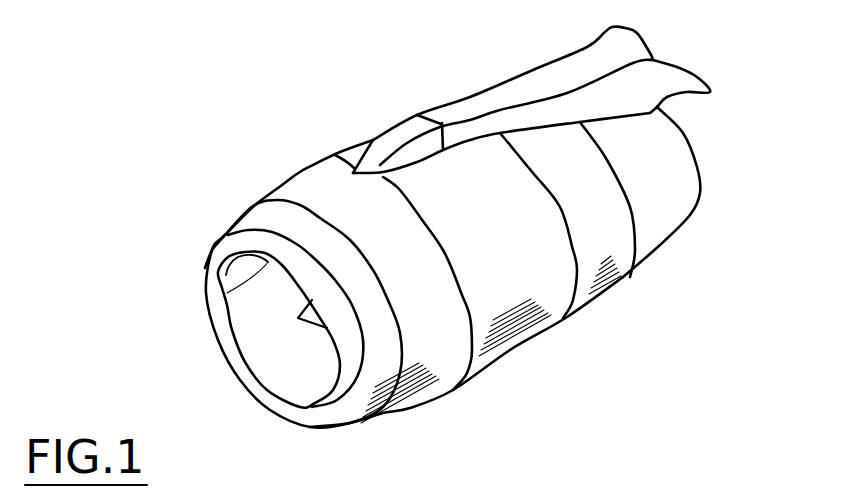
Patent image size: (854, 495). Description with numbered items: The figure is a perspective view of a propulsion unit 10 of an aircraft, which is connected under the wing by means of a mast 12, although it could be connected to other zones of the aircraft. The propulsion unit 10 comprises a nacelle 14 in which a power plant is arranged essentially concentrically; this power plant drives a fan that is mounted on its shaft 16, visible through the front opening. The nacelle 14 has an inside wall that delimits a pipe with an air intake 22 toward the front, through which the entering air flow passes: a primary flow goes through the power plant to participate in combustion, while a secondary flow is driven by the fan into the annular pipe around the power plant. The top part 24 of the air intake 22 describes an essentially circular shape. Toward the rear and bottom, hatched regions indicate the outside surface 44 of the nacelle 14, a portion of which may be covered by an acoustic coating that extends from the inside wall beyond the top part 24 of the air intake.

The propulsion unit 10 is at (284, 140).
The mast 12 is at (537, 80).
The nacelle 14 is at (588, 310).
The shaft 16 is at (297, 318).
The air intake 22 is at (307, 355).
The top part of the air intake 24 is at (227, 293).
The outside surface of the nacelle 44 is at (418, 387).